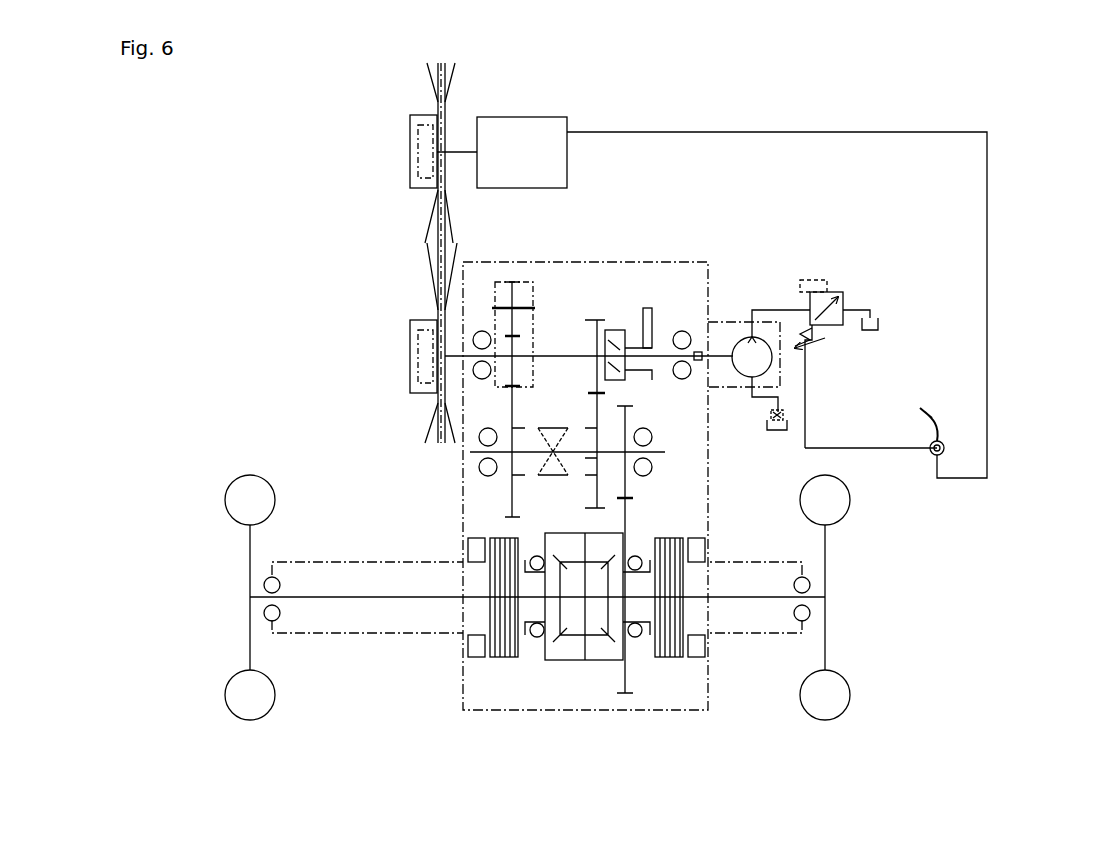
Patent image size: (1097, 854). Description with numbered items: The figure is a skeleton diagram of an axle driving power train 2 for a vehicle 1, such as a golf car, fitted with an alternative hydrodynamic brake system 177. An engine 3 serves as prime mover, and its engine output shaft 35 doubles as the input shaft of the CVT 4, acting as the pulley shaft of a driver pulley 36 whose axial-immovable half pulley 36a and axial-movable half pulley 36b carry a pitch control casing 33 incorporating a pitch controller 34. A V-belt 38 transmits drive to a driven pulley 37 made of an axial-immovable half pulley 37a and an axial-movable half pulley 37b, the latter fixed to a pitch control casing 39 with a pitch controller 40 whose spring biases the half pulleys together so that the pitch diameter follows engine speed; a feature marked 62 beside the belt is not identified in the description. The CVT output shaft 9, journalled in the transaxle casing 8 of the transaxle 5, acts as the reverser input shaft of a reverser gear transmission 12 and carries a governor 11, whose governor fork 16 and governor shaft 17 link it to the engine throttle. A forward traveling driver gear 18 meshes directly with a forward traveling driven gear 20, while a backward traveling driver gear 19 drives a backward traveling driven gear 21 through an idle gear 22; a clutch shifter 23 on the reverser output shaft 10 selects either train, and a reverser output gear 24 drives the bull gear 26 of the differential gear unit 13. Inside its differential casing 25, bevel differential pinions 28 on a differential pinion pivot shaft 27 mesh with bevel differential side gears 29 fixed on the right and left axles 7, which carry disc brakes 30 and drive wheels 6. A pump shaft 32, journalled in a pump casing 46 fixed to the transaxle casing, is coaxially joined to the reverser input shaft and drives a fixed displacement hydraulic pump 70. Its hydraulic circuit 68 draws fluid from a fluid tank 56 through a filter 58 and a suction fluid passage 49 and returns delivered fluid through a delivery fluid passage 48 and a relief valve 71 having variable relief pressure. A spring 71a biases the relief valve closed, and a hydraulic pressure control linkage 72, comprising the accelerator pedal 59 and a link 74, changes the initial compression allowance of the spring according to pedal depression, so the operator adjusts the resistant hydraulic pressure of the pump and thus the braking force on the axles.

The vehicle 1 is at (1035, 130).
The axle driving power train 2 is at (870, 115).
The engine 3 is at (578, 118).
The CVT 4 is at (412, 241).
The transaxle 5 is at (728, 262).
The drive wheels 6 is at (235, 700).
The axles 7 is at (380, 597).
The transaxle casing 8 is at (632, 262).
The reverser input shaft 9 is at (462, 352).
The reverser output shaft 10 is at (480, 432).
The governor 11 is at (622, 330).
The reverser gear transmission 12 is at (567, 300).
The differential gear unit 13 is at (584, 623).
The governor fork 16 is at (655, 340).
The governor shaft 17 is at (655, 310).
The forward traveling driver gear 18 is at (593, 322).
The backward traveling driver gear 19 is at (520, 338).
The forward traveling driven gear 20 is at (592, 393).
The backward traveling driven gear 21 is at (520, 387).
The idle gear 22 is at (518, 288).
The clutch shifter 23 is at (553, 436).
The reverser output gear 24 is at (632, 410).
The differential casing 25 is at (562, 665).
The bull gear 26 is at (634, 500).
The differential pinion pivot shaft 27 is at (578, 536).
The bevel differential pinions 28 is at (606, 640).
The bevel differential side gears 29 is at (558, 640).
The disc brakes 30 is at (480, 668).
The pump shaft 32 is at (740, 340).
The pitch control casing 33 is at (418, 118).
The pitch controller 34 is at (428, 153).
The engine output shaft 35 is at (470, 150).
The driver pulley 36 is at (462, 64).
The axial-immovable half pulley 36a is at (455, 100).
The axial-movable half pulley 36b is at (432, 96).
The driven pulley 37 is at (455, 268).
The axial-immovable half pulley 37a is at (499, 329).
The axial-movable half pulley 37b is at (430, 293).
The V-belt 38 is at (430, 250).
The pitch control casing 39 is at (410, 320).
The pitch controller 40 is at (413, 419).
The pump casing 46 is at (748, 305).
The delivery fluid passage 48 is at (790, 310).
The suction fluid passage 49 is at (778, 394).
The fluid tank 56 is at (878, 325).
The filter 58 is at (770, 420).
The accelerator pedal 59 is at (928, 418).
The belt travel direction 62 is at (445, 92).
The hydraulic circuit 68 is at (870, 285).
The fixed displacement hydraulic pump 70 is at (785, 368).
The relief valve 71 is at (838, 290).
The spring 71a is at (828, 347).
The hydraulic pressure control linkage 72 is at (868, 418).
The link 74 is at (865, 450).
The hydrodynamic brake system 177 is at (905, 293).